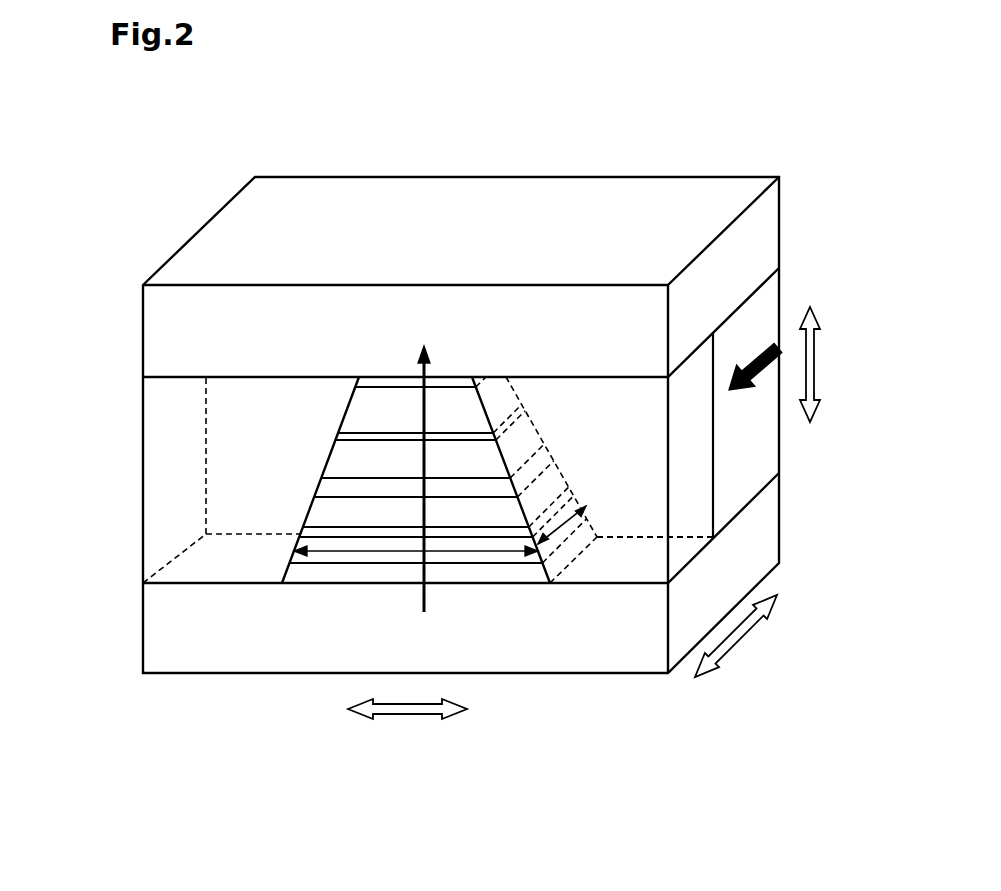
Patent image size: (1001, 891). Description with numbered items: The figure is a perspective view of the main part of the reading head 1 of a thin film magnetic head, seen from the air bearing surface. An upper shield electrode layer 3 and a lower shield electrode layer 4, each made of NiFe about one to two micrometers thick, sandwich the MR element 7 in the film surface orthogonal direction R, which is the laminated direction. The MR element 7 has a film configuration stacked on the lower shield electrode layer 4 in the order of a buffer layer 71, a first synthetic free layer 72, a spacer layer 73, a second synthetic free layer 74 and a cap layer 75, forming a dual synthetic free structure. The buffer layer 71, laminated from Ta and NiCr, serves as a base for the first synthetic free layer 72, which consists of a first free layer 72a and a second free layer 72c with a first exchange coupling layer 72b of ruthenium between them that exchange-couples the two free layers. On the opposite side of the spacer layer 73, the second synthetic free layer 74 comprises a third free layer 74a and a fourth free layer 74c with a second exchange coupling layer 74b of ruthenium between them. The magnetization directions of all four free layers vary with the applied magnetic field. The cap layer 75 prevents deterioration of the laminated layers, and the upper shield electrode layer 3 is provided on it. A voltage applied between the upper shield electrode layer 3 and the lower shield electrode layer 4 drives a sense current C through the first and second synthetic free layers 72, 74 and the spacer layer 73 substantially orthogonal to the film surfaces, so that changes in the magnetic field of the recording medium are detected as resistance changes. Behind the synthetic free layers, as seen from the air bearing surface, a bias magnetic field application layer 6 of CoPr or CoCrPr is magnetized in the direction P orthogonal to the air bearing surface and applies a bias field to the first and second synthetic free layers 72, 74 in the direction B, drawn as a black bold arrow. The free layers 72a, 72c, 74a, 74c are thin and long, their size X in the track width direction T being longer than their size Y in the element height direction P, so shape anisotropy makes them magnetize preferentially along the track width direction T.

The reading head 1 is at (499, 149).
The upper shield electrode layer 3 is at (780, 213).
The lower shield electrode layer 4 is at (780, 514).
The bias magnetic field application layer 6 is at (733, 445).
The MR element 7 is at (57, 372).
The buffer layer 71 is at (287, 570).
The first synthetic free layer 72 is at (92, 480).
The first free layer 72a is at (296, 547).
The first exchange coupling layer 72b is at (301, 533).
The second free layer 72c is at (308, 513).
The spacer layer 73 is at (318, 488).
The second synthetic free layer 74 is at (92, 395).
The third free layer 74a is at (325, 468).
The second exchange coupling layer 74b is at (336, 438).
The fourth free layer 74c is at (343, 420).
The cap layer 75 is at (345, 378).
The bias magnetic field direction B is at (748, 376).
The sense current C is at (428, 398).
The direction orthogonal to the ABS P is at (743, 638).
The film surface orthogonal direction R is at (812, 357).
The track width direction T is at (407, 717).
The size in the track width direction X is at (470, 552).
The size in the direction orthogonal to the ABS Y is at (566, 518).